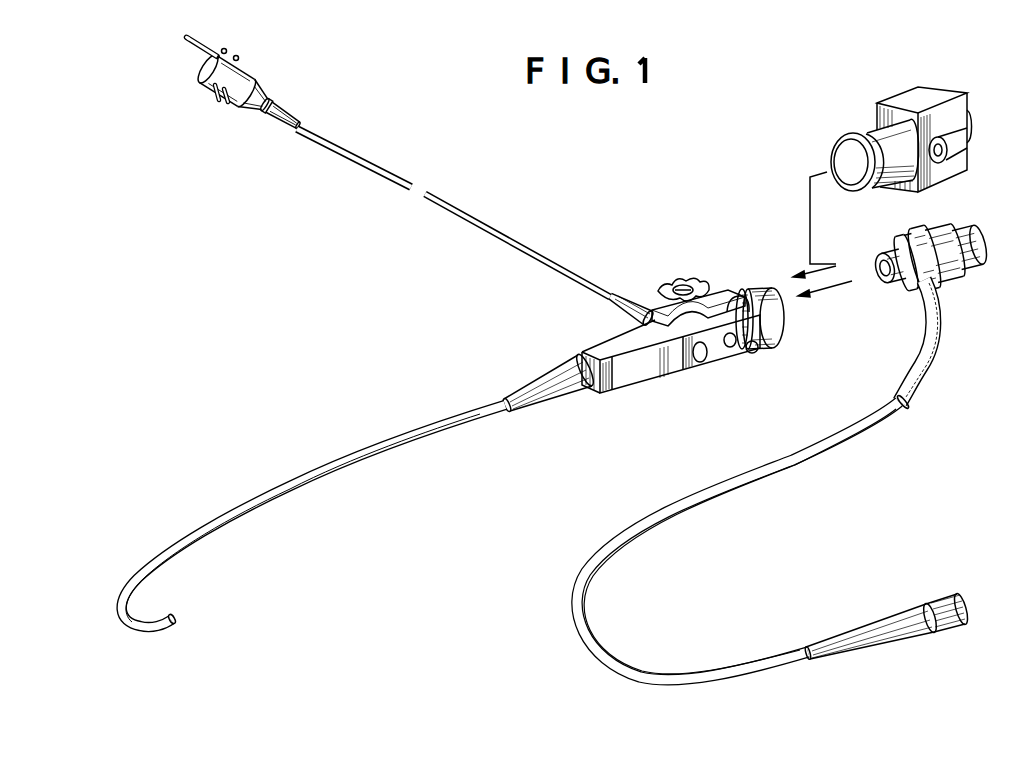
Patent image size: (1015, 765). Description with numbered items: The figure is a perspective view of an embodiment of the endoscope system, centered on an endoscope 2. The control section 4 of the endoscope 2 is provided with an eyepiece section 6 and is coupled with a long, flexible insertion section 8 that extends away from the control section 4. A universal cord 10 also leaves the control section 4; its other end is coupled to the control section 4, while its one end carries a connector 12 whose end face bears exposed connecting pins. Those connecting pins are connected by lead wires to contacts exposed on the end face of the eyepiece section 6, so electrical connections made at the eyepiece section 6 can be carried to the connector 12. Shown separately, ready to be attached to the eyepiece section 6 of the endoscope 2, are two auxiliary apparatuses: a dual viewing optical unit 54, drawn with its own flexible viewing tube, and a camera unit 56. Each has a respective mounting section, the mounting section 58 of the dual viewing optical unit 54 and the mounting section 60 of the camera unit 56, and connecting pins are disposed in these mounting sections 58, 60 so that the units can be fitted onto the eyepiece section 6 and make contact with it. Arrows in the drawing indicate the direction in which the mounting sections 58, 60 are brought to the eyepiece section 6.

The endoscope 2 is at (528, 385).
The control section 4 is at (648, 373).
The eyepiece section 6 is at (773, 333).
The insertion section 8 is at (433, 427).
The universal cord 10 is at (363, 163).
The connector 12 is at (239, 74).
The dual viewing optical unit 54 is at (885, 428).
The camera unit 56 is at (901, 100).
The mounting section 58 is at (908, 278).
The mounting section 60 is at (877, 138).